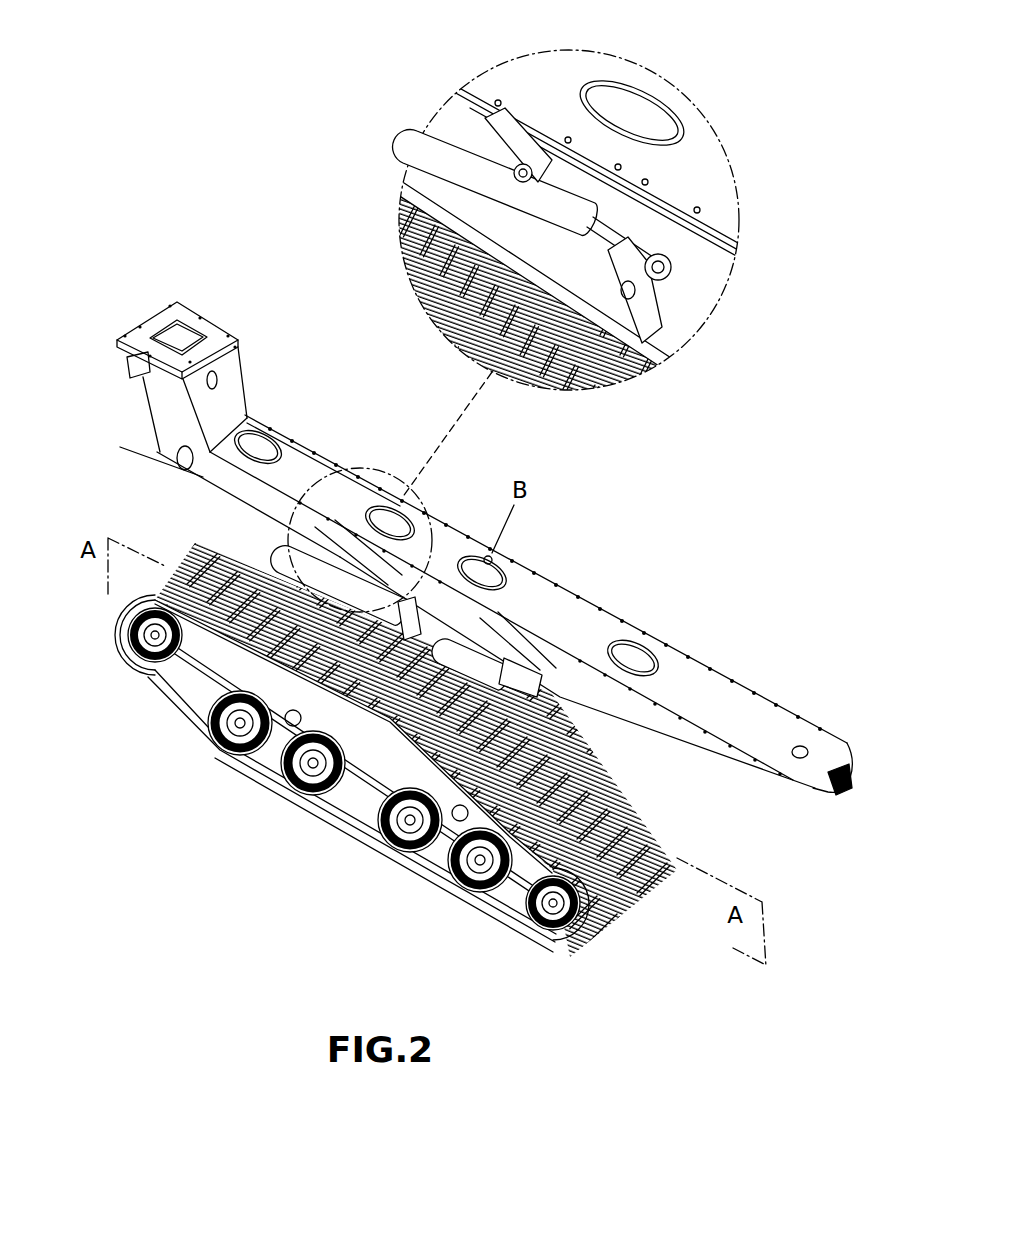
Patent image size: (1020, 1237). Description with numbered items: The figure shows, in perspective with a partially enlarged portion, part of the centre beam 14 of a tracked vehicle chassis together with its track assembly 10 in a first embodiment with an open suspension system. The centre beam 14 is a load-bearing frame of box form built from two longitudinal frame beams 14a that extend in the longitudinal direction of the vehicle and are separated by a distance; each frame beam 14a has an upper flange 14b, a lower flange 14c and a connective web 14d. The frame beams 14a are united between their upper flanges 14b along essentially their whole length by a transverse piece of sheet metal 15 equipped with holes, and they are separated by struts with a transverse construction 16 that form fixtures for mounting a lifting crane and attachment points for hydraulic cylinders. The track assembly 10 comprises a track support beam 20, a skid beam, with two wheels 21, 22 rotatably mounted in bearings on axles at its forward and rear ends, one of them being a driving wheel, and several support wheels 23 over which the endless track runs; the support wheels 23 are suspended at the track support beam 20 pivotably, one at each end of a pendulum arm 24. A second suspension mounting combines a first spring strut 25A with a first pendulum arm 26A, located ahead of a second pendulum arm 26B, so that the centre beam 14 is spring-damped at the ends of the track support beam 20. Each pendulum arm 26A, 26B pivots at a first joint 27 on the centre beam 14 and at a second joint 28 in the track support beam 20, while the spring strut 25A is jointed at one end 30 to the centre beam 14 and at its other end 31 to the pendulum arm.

The track assembly 10 is at (404, 909).
The centre beam 14 is at (527, 82).
The longitudinal frame beams 14a is at (262, 511).
The upper flange 14b is at (176, 453).
The lower flange 14c is at (203, 487).
The connective web 14d is at (236, 417).
The transverse piece of sheet metal 15 is at (591, 633).
The struts with a transverse construction 16 is at (167, 407).
The track support beam 20 is at (233, 680).
The wheel 21 is at (122, 630).
The wheel 22 is at (534, 928).
The support wheels 23 is at (310, 790).
The pendulum arm 24 is at (243, 732).
The first spring strut 25A is at (590, 205).
The first pendulum arm 26A is at (310, 547).
The second pendulum arm 26B is at (480, 637).
The first joint 27 is at (495, 118).
The second joint 28 is at (240, 770).
The end of spring strut 30 is at (527, 160).
The end of spring strut 31 is at (672, 270).